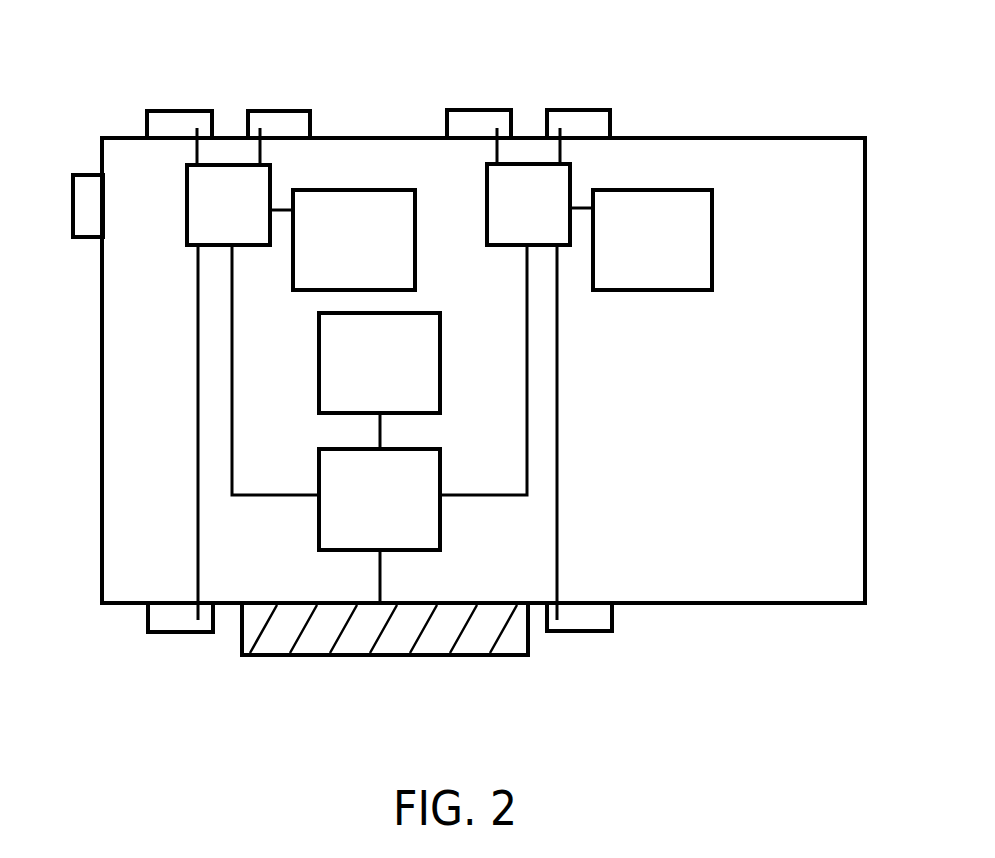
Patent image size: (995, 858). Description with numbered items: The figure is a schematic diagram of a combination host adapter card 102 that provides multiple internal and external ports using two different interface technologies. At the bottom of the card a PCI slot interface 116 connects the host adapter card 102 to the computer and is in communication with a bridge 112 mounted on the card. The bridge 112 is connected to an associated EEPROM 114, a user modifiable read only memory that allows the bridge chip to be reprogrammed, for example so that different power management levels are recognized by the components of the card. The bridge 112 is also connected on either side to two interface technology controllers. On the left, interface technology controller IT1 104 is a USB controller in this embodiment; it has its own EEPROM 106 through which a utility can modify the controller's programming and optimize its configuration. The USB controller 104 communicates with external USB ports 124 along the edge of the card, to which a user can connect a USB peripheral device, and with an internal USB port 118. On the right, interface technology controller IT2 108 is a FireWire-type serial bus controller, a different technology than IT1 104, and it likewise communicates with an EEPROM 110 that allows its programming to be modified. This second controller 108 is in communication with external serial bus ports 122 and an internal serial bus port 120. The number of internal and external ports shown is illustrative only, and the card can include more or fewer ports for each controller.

The host adapter card 102 is at (750, 605).
The interface technology controller 1 (IT1) 104 is at (253, 374).
The EEPROM 106 is at (354, 240).
The interface technology controller 2 (IT2) 108 is at (516, 374).
The EEPROM 110 is at (652, 240).
The bridge 112 is at (379, 526).
The EEPROM 114 is at (379, 381).
The PCI slot interface 116 is at (427, 656).
The internal USB port 118 is at (180, 633).
The internal IEEE 1394 port 120 is at (577, 632).
The external IEEE 1394 ports 122 is at (460, 111).
The external USB ports 124 is at (160, 111).